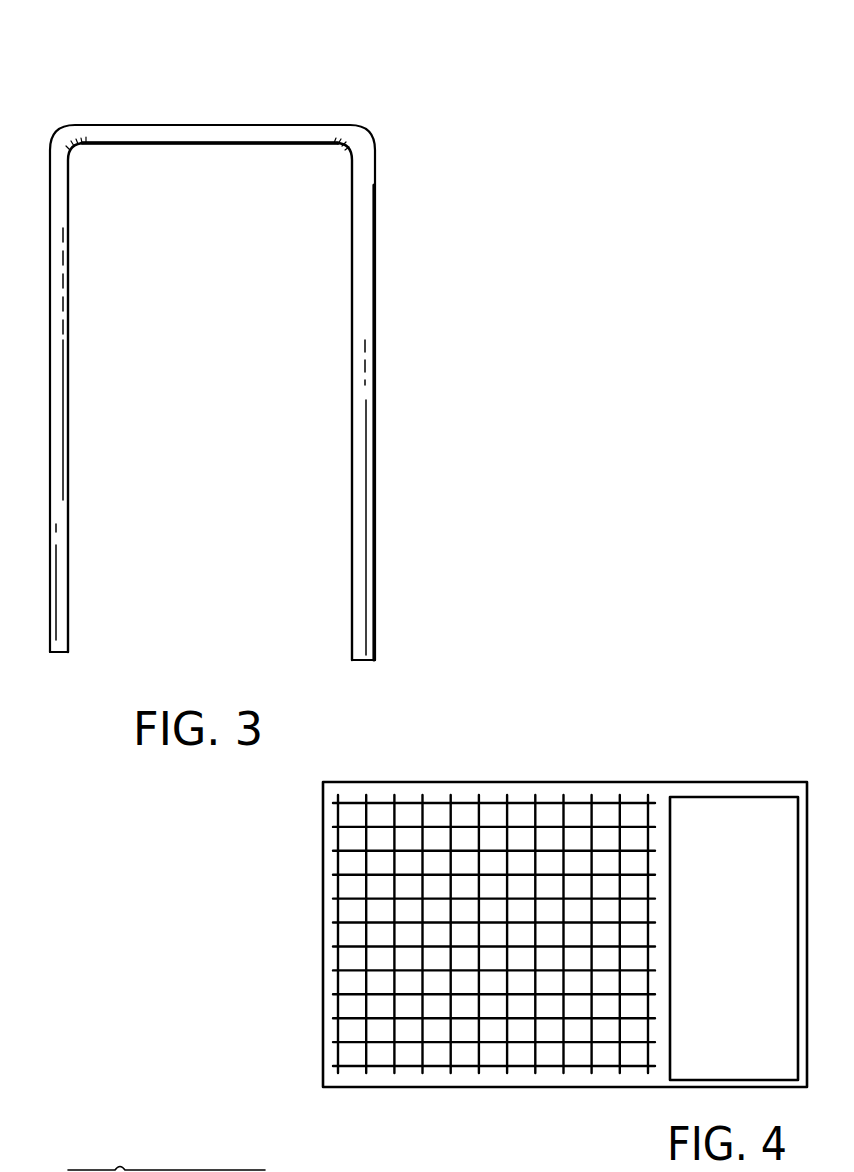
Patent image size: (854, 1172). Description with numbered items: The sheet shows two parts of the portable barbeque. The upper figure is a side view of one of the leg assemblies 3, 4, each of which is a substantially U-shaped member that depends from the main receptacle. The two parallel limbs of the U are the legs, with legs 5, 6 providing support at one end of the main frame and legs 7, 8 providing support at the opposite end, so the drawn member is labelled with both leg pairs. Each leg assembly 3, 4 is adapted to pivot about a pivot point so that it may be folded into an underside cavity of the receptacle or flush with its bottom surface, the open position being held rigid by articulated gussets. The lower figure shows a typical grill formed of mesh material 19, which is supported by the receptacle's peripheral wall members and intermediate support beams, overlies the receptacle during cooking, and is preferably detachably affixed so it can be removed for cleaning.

In FIG. 3, the leg assembly 3 is at (323, 346).
In FIG. 3, the leg assembly 4 is at (323, 346).
In FIG. 3, the leg 5 is at (113, 434).
In FIG. 3, the leg 7 is at (62, 400).
In FIG. 3, the leg 6 is at (416, 495).
In FIG. 3, the leg 8 is at (362, 405).
In FIG. 4, the mesh material 19 is at (607, 778).